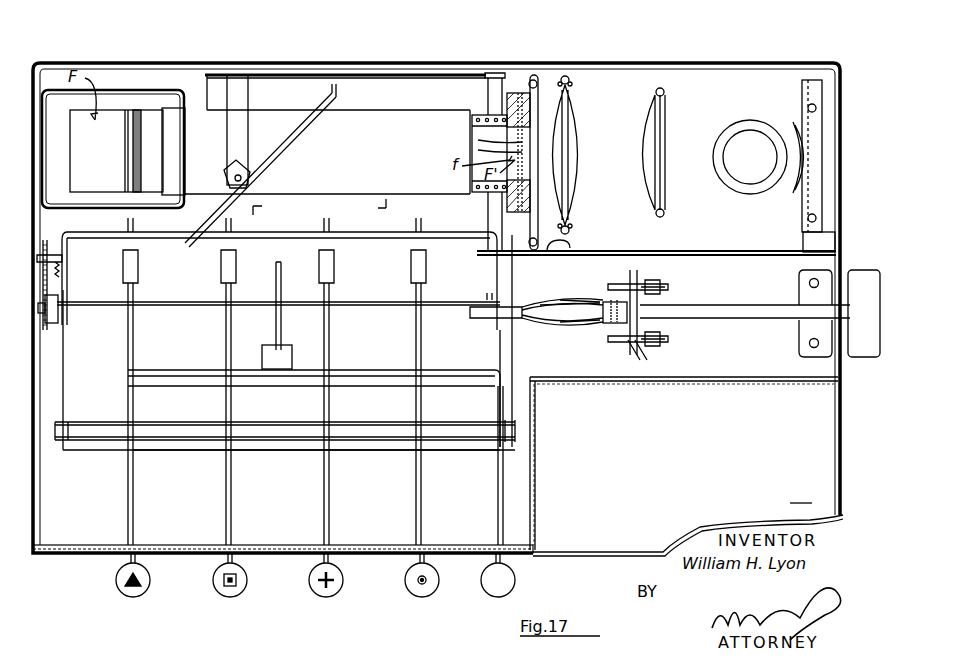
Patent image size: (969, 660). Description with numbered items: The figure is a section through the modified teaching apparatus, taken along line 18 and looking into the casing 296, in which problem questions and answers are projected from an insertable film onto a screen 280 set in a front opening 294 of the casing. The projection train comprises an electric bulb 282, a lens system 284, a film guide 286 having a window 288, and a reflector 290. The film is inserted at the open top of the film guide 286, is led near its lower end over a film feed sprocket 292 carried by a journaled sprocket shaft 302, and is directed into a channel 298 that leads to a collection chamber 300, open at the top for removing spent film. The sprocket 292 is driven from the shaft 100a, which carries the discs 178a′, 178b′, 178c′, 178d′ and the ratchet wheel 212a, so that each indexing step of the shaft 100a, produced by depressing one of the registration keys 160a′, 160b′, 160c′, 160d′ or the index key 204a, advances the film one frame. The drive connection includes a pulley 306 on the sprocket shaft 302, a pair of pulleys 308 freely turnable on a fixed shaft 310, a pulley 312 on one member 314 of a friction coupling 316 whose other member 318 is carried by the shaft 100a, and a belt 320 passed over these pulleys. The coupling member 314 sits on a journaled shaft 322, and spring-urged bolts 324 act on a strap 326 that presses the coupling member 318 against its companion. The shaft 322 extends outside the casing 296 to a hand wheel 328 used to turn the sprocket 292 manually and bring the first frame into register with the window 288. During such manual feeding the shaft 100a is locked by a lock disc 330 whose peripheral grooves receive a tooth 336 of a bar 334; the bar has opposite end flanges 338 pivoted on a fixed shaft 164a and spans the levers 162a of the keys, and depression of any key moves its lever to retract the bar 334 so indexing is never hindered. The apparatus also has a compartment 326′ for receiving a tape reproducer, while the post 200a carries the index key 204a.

The section line 18 is at (380, 48).
The shaft 100a is at (355, 308).
The registration key 160a′ is at (420, 597).
The registration key 160b′ is at (326, 597).
The registration key 160c′ is at (246, 586).
The registration key 160d′ is at (128, 596).
The lever 162a is at (226, 498).
The fixed shaft 164a is at (362, 452).
The disc 178a′ is at (417, 340).
The disc 178b′ is at (330, 328).
The disc 178c′ is at (226, 340).
The disc 178d′ is at (135, 340).
The next button post 200a is at (498, 510).
The index key 204a is at (496, 597).
The ratchet wheel 212a is at (512, 355).
The screen 280 is at (366, 562).
The electric bulb 282 is at (752, 175).
The lens system 284 is at (643, 125).
The film guide 286 is at (524, 93).
The window 288 is at (478, 146).
The reflector 290 is at (282, 156).
The film feed sprocket 292 is at (480, 122).
The front opening 294 is at (62, 555).
The casing 296 is at (440, 60).
The channel 298 is at (362, 125).
The collection chamber 300 is at (129, 102).
The sprocket shaft 302 is at (498, 280).
The pulley 306 is at (488, 307).
The pulleys 308 is at (665, 287).
The fixed shaft 310 is at (665, 300).
The pulley 312 is at (634, 348).
The coupling member 314 is at (632, 280).
The friction coupling 316 is at (610, 315).
The coupling member 318 is at (600, 300).
The belt 320 is at (563, 322).
The shaft 322 is at (755, 322).
The spring-urged bolts 324 is at (655, 282).
The strap 326 is at (575, 304).
The compartment 326′ is at (842, 503).
The hand wheel 328 is at (860, 275).
The lock disc 330 is at (278, 292).
The bar 334 is at (360, 388).
The tooth 336 is at (284, 350).
The end flanges 338 is at (128, 400).